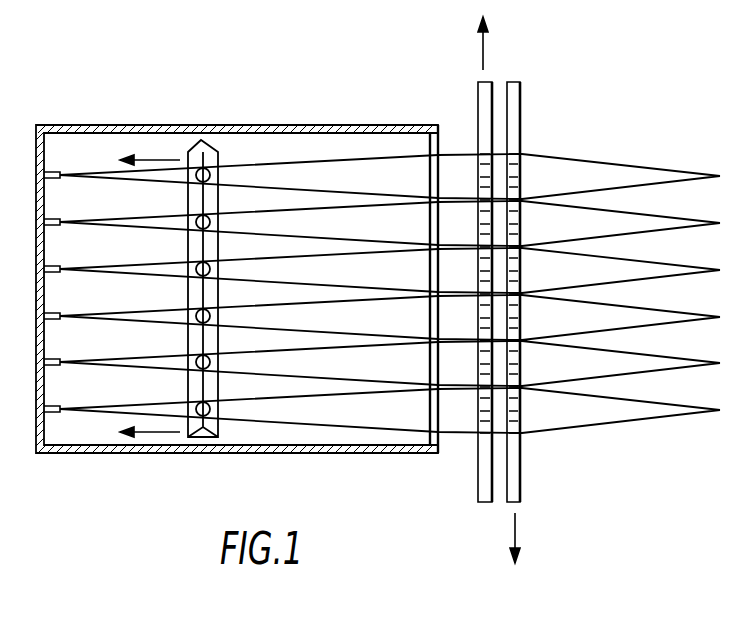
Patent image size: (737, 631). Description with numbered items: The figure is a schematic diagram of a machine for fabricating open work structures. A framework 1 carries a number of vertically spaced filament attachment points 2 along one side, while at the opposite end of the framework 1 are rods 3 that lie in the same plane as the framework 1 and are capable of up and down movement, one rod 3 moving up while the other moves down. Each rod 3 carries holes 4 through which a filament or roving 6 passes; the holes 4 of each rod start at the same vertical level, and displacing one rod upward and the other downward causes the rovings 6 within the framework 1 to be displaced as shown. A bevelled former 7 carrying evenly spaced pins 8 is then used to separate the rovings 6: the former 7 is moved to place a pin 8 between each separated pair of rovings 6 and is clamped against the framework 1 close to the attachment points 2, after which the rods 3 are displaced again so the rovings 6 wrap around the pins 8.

The framework 1 is at (112, 453).
The filament attachment points 2 is at (52, 268).
The rods 3 is at (513, 477).
The holes 4 is at (478, 452).
The roving 6 is at (325, 160).
The bevelled former 7 is at (216, 428).
The pins 8 is at (197, 360).